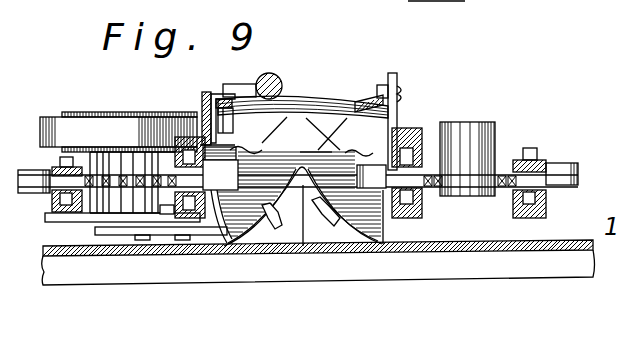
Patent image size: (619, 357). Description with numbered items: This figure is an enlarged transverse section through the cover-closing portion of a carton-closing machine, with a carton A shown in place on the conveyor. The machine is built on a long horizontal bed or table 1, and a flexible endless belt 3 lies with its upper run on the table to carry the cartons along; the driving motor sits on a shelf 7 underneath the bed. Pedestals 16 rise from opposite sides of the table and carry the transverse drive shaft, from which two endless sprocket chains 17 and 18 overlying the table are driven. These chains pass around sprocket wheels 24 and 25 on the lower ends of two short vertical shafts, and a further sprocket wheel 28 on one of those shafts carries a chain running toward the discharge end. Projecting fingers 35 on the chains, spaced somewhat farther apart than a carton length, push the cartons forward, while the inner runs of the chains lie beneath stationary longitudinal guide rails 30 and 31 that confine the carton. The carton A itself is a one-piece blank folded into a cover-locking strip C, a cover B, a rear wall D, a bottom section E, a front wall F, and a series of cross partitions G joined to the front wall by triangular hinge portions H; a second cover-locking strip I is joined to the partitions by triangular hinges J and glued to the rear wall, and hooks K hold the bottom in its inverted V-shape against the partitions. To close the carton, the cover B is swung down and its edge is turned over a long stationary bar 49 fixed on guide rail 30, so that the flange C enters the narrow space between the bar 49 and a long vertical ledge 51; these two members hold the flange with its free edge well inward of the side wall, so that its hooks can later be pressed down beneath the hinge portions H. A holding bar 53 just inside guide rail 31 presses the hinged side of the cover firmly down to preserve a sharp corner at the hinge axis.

The bed or table 1 is at (519, 256).
The endless belt 3 is at (473, 246).
The shelf 7 is at (434, 1).
The pedestals 16 is at (241, 84).
The sprocket chain 17 is at (53, 182).
The sprocket chain 18 is at (548, 167).
The sprocket wheel 24 is at (95, 192).
The sprocket wheel 25 is at (498, 170).
The sprocket wheel 28 is at (168, 224).
The guide rail 30 is at (187, 140).
The guide rail 31 is at (412, 128).
The fingers 35 is at (237, 192).
The stationary bar 49 is at (221, 98).
The vertical ledge 51 is at (205, 93).
The holding bar 53 is at (360, 101).
The carton A is at (303, 250).
The cover B is at (300, 97).
The cover-locking strip C is at (241, 127).
The rear wall D is at (398, 114).
The bottom section E is at (307, 190).
The front wall F is at (220, 247).
The cross partitions G is at (307, 132).
The triangular hinge portions H is at (259, 152).
The cover-locking strip I is at (313, 152).
The triangular hinges J is at (359, 137).
The hooks K is at (277, 231).